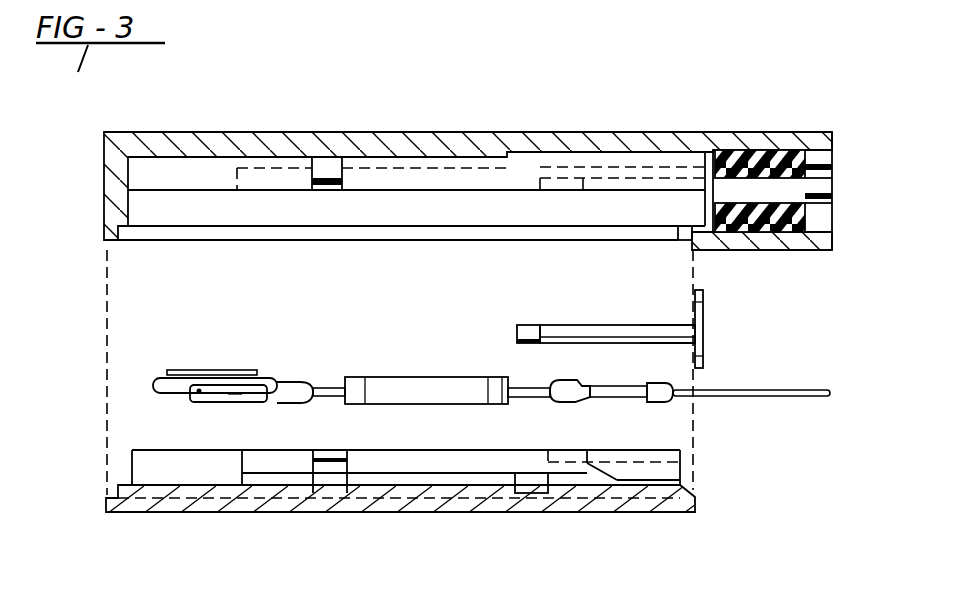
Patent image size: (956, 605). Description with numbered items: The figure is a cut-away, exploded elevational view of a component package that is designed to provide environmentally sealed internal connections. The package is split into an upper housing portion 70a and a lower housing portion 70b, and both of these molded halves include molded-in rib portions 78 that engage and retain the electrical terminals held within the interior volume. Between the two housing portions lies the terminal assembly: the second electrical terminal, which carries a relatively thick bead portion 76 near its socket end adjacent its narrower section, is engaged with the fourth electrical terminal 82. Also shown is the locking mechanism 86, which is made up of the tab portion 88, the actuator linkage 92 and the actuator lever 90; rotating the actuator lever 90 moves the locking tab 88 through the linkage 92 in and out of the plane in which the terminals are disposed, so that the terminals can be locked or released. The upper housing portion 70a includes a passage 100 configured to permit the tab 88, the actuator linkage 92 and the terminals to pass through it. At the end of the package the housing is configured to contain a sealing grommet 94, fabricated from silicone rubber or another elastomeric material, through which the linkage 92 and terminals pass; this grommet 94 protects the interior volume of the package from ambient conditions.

The upper housing portion 70a is at (104, 200).
The lower housing portion 70b is at (160, 512).
The bead portion 76 is at (347, 378).
The rib portion 78 is at (316, 178).
The fourth electrical terminal 82 is at (518, 386).
The locking mechanism 86 is at (590, 316).
The locking tab 88 is at (517, 325).
The actuator lever 90 is at (703, 365).
The actuator linkage 92 is at (645, 325).
The sealing grommet 94 is at (778, 155).
The passage 100 is at (703, 180).